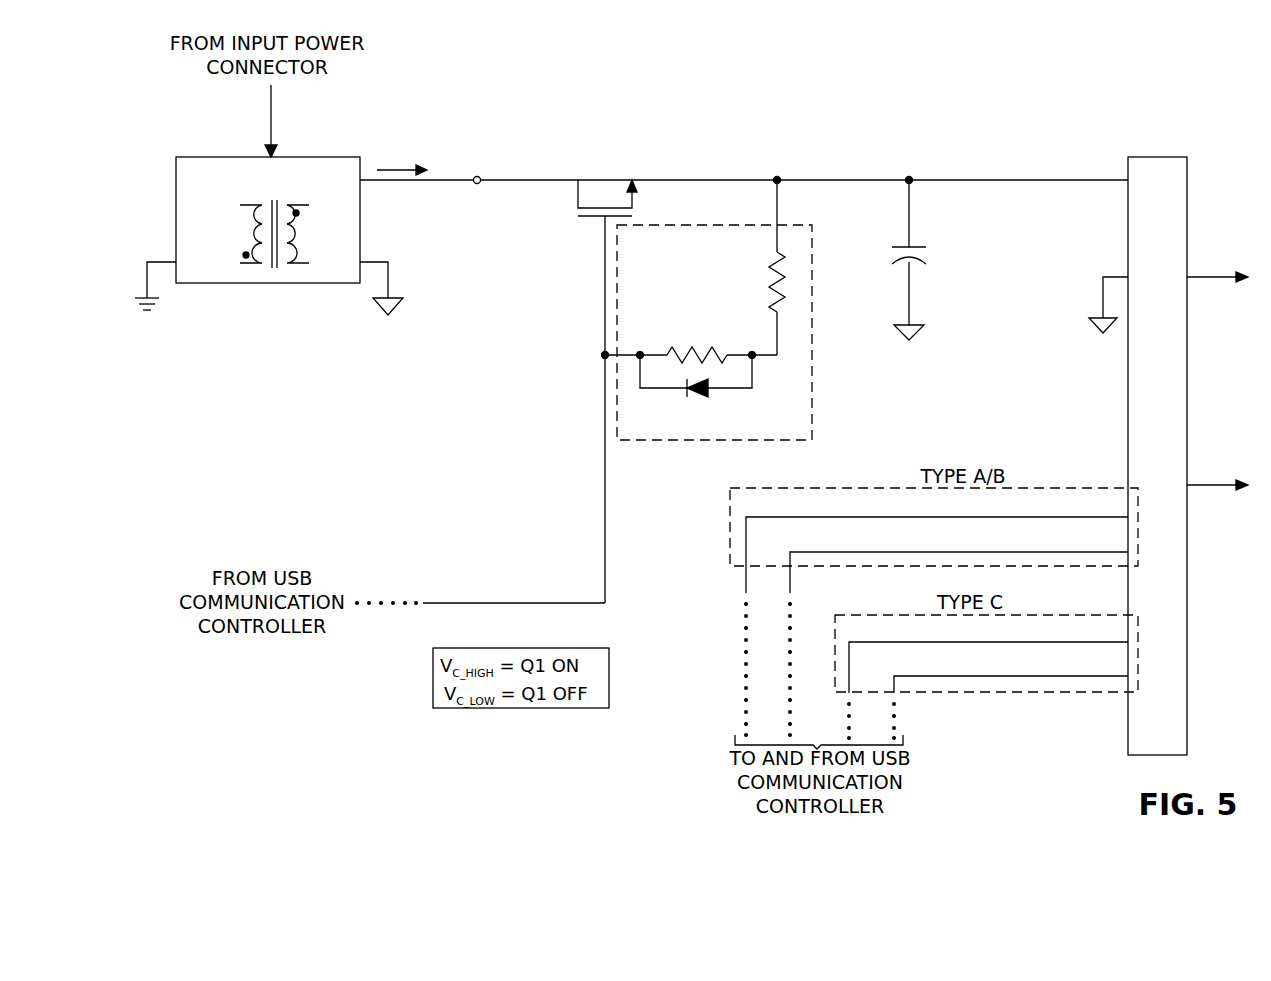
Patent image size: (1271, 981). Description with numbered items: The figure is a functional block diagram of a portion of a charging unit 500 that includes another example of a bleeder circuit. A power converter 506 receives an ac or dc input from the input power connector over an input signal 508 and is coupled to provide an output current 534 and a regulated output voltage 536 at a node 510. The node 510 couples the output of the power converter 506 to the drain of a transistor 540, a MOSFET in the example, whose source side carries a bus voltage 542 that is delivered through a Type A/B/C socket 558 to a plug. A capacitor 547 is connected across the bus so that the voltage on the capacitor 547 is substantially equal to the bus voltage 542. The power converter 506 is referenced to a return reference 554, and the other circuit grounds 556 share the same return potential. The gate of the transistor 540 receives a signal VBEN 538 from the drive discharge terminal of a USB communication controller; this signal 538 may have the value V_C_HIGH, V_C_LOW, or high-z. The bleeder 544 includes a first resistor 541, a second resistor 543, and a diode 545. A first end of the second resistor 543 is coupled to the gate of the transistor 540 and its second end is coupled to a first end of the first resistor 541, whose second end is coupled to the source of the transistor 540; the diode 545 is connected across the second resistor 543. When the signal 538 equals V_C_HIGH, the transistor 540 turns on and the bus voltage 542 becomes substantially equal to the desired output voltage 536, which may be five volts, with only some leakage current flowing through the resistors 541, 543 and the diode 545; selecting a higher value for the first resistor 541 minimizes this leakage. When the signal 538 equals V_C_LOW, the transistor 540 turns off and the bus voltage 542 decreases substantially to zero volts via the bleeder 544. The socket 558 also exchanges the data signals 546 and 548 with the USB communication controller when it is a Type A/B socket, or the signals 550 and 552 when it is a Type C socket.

The power supply system 500 is at (1213, 77).
The power converter 506 is at (228, 154).
The input from input power connector 508 is at (278, 104).
The node N1 510 is at (506, 162).
The output current IO 534 is at (420, 148).
The output voltage VO 536 is at (399, 200).
The signal VBEN 538 is at (515, 572).
The transistor Q1 540 is at (605, 164).
The first resistor R1 541 is at (766, 272).
The bus voltage VBUS 542 is at (1087, 226).
The second resistor R2 543 is at (720, 350).
The bleeder 544 is at (670, 454).
The diode D1 545 is at (714, 396).
The signal D+ 546 is at (1097, 508).
The capacitor CBUS 547 is at (934, 260).
The signal D− 548 is at (1097, 542).
The signal CC1 550 is at (1097, 633).
The signal CC2 552 is at (1097, 667).
The earth ground 554 is at (135, 310).
The circuit ground 556 is at (402, 316).
The Type A/B/C socket 558 is at (1158, 154).